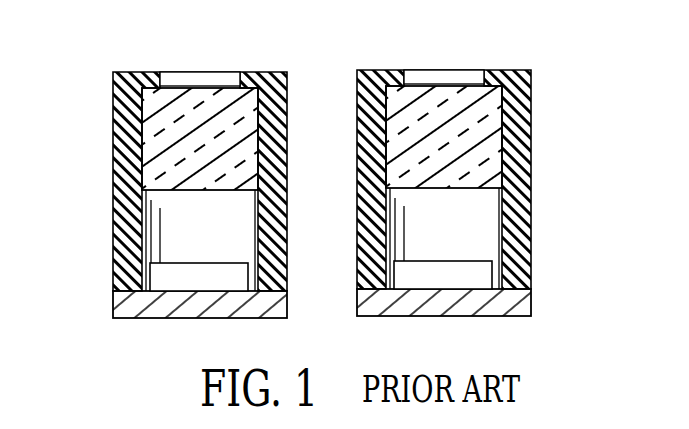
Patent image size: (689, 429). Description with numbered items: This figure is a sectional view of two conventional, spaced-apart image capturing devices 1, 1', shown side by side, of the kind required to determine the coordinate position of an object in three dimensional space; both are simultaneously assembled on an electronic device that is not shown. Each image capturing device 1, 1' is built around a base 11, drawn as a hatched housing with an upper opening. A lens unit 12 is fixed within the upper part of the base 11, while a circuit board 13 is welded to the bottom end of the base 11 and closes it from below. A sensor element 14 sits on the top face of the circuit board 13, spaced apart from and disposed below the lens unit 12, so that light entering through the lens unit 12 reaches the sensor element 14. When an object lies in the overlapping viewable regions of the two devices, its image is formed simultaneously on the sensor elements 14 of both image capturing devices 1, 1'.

The image capturing device 1 is at (157, 162).
The image capturing device 1' is at (491, 158).
The base 11 is at (115, 126).
The lens unit 12 is at (237, 173).
The circuit board 13 is at (124, 305).
The sensor element 14 is at (233, 277).